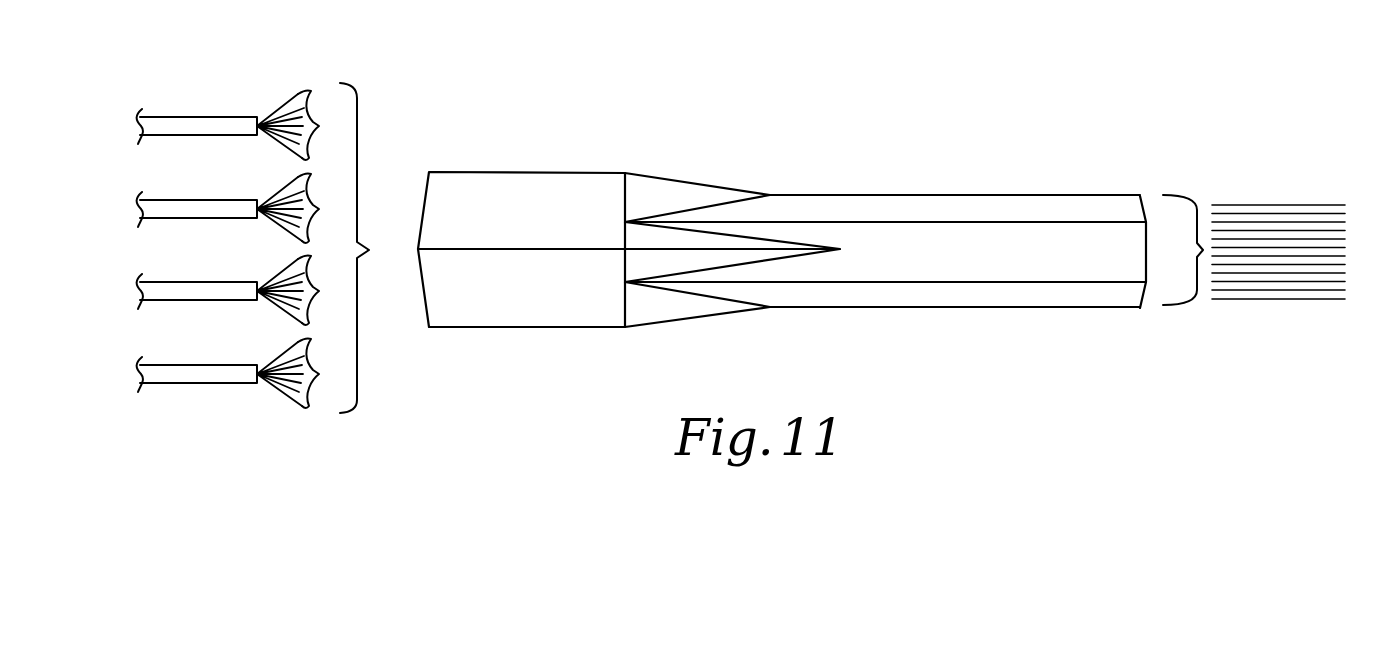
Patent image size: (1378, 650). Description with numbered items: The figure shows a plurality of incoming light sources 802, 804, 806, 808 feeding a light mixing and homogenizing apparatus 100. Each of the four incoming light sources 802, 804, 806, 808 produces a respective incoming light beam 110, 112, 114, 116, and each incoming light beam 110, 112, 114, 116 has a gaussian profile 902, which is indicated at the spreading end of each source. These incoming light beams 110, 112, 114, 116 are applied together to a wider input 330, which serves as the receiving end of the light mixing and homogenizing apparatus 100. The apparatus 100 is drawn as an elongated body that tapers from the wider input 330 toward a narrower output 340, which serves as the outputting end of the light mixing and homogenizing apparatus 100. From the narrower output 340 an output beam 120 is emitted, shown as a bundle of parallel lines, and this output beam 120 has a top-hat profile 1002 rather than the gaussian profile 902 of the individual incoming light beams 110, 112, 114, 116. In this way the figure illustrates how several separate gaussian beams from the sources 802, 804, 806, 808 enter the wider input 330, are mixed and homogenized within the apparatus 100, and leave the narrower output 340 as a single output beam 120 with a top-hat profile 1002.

The light mixing and homogenizing apparatus 100 is at (797, 202).
The incoming light beam 110 is at (270, 110).
The incoming light beam 112 is at (272, 190).
The incoming light beam 114 is at (272, 273).
The incoming light beam 116 is at (272, 355).
The output beam 120 is at (1280, 205).
The wider input 330 is at (414, 184).
The narrower output 340 is at (1152, 195).
The incoming light source 802 is at (168, 116).
The incoming light source 804 is at (168, 199).
The incoming light source 806 is at (168, 281).
The incoming light source 808 is at (168, 364).
The gaussian profile 902 is at (290, 156).
The top-hat profile 1002 is at (1188, 303).